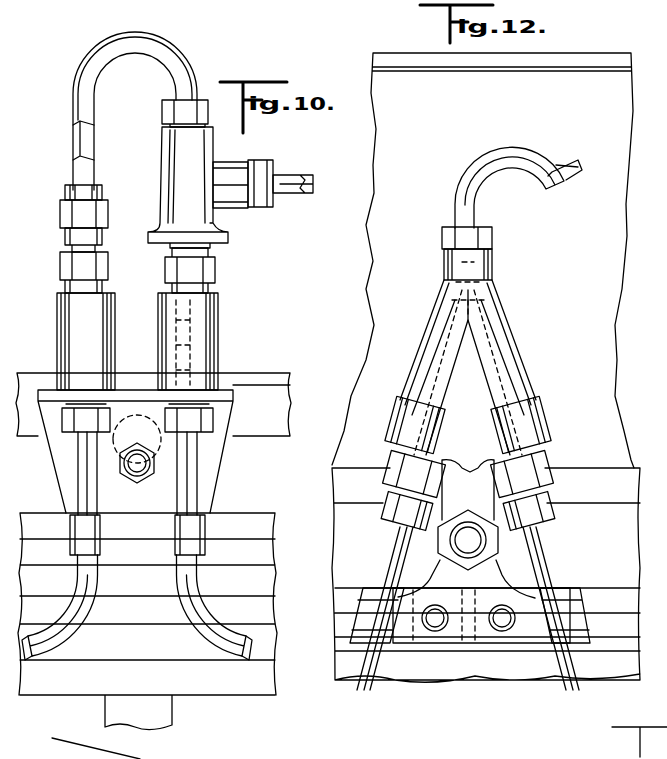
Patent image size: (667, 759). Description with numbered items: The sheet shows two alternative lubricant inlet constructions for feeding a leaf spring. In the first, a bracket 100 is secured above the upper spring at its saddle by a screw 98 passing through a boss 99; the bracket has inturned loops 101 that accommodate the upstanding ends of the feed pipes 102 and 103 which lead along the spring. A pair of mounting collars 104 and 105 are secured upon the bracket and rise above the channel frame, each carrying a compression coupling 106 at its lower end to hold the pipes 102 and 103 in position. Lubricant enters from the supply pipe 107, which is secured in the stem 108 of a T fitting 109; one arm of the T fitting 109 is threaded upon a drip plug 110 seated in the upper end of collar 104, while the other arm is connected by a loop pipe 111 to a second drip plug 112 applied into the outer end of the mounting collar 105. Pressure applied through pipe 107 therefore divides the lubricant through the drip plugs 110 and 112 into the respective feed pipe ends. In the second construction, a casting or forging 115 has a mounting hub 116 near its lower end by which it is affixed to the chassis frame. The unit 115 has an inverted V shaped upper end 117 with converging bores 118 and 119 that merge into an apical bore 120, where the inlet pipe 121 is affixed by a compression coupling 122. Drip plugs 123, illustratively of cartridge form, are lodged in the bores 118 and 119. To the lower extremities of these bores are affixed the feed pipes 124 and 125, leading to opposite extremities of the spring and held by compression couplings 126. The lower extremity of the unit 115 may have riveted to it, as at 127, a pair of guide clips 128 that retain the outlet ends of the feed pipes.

In FIG. 10, the screw 98 is at (137, 478).
In FIG. 10, the boss 99 is at (137, 445).
In FIG. 10, the bracket 100 is at (215, 468).
In FIG. 10, the inturned loops 101 is at (217, 552).
In FIG. 10, the feed pipe 102 is at (212, 640).
In FIG. 10, the feed pipe 103 is at (88, 608).
In FIG. 10, the mounting collar 104 is at (218, 316).
In FIG. 10, the mounting collar 105 is at (62, 315).
In FIG. 10, the compression couplings 106 is at (213, 418).
In FIG. 10, the supply pipe 107 is at (293, 192).
In FIG. 10, the stem 108 is at (233, 202).
In FIG. 10, the T fitting 109 is at (172, 153).
In FIG. 10, the drip plug 110 is at (215, 270).
In FIG. 10, the loop pipe 111 is at (83, 60).
In FIG. 10, the drip plug 112 is at (62, 262).
In FIG. 12, the casting or forging 115 is at (427, 575).
In FIG. 12, the mounting hub 116 is at (498, 568).
In FIG. 12, the Y fitting 117 is at (497, 287).
In FIG. 12, the converging bore 118 is at (518, 385).
In FIG. 12, the converging bore 119 is at (443, 358).
In FIG. 12, the apical bore 120 is at (493, 255).
In FIG. 12, the inlet pipe 121 is at (517, 150).
In FIG. 12, the compression coupling 122 is at (445, 228).
In FIG. 12, the drip plugs 123 is at (483, 360).
In FIG. 12, the feed pipe 124 is at (545, 535).
In FIG. 12, the feed pipe 125 is at (388, 550).
In FIG. 12, the compression couplings 126 is at (545, 500).
In FIG. 12, the rivets 127 is at (502, 623).
In FIG. 12, the guide clips 128 is at (388, 633).